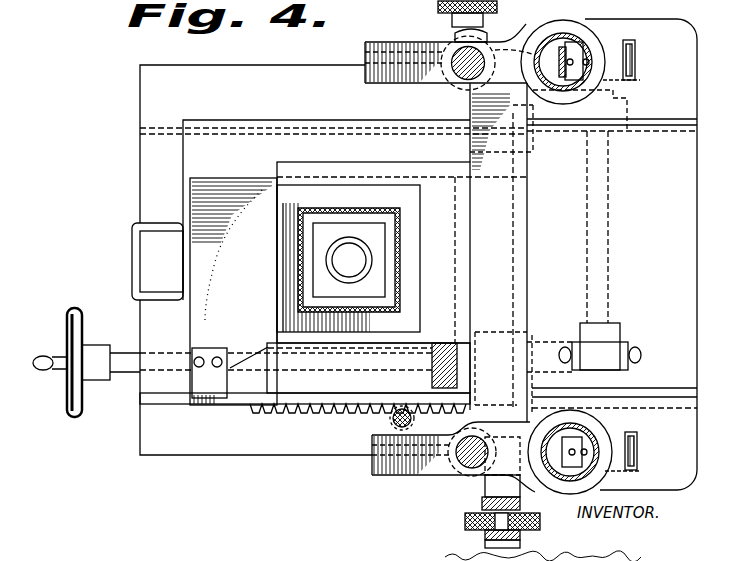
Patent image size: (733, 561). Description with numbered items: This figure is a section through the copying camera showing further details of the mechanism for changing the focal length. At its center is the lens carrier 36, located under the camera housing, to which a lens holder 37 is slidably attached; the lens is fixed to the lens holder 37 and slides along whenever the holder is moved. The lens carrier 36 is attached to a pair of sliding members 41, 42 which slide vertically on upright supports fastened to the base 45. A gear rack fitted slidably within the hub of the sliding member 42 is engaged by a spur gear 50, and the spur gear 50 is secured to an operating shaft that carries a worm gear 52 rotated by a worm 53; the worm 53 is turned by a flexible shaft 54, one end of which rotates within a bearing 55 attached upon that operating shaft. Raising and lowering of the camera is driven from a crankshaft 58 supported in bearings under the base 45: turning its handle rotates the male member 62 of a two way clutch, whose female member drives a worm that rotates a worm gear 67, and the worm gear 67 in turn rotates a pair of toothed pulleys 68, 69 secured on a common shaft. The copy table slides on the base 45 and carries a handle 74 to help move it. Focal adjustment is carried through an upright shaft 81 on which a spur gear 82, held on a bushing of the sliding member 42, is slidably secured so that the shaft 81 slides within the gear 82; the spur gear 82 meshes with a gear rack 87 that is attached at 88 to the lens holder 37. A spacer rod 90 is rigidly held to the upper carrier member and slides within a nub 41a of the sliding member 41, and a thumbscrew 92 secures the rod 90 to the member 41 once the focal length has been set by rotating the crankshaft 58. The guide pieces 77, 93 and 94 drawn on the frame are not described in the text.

The lens carrier 36 is at (322, 162).
The lens holder 37 is at (233, 291).
The sliding member 41 is at (560, 21).
The nub 41a is at (455, 33).
The sliding member 42 is at (392, 476).
The base 45 is at (418, 254).
The spur gear 50 is at (468, 470).
The worm gear 52 is at (482, 503).
The worm 53 is at (520, 492).
The flexible shaft 54 is at (465, 522).
The bearing 55 is at (485, 545).
The crankshaft 58 is at (126, 373).
The male member 62 is at (622, 340).
The worm gear 67 is at (84, 296).
The toothed pulley 68 is at (640, 471).
The toothed pulley 69 is at (640, 80).
The handle 74 is at (133, 258).
The inner frame 77 is at (183, 327).
The upright shaft 81 is at (383, 418).
The spur gear 82 is at (447, 390).
The gear rack 87 is at (328, 412).
The attachment point 88 is at (213, 348).
The spacer rod 90 is at (456, 79).
The thumbscrew 92 is at (438, 8).
The upper guide plate 93 is at (636, 58).
The lower guide plate 94 is at (637, 448).